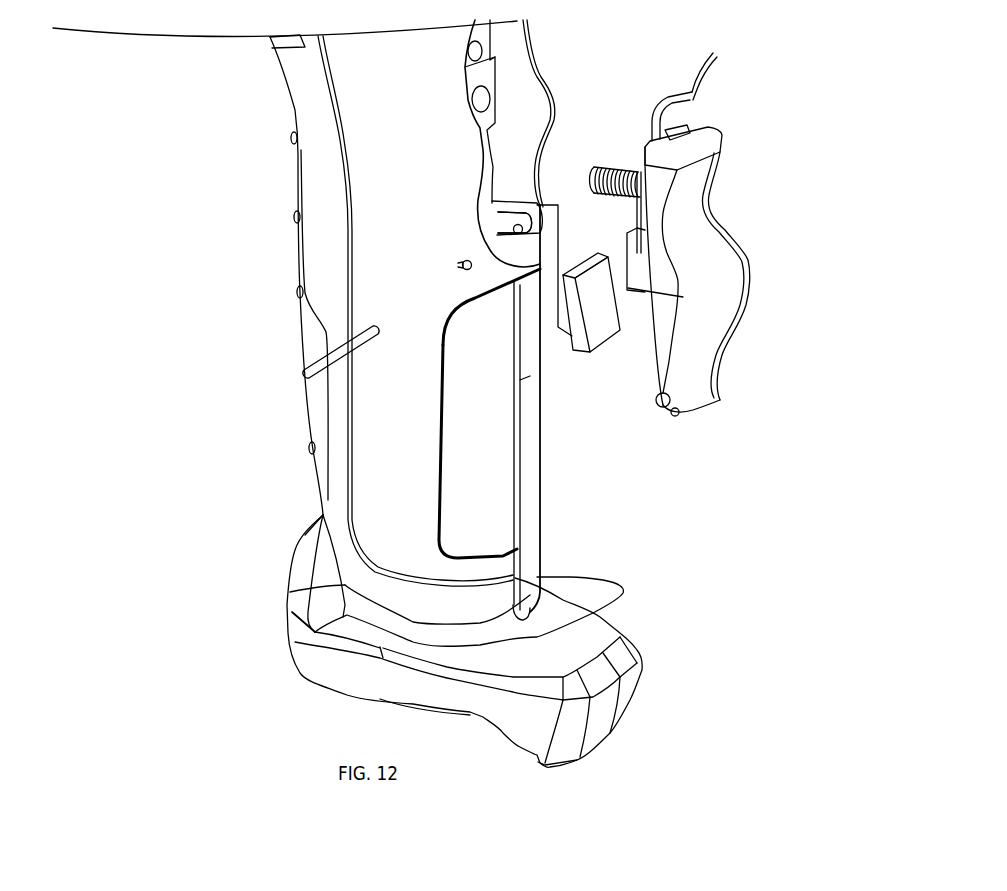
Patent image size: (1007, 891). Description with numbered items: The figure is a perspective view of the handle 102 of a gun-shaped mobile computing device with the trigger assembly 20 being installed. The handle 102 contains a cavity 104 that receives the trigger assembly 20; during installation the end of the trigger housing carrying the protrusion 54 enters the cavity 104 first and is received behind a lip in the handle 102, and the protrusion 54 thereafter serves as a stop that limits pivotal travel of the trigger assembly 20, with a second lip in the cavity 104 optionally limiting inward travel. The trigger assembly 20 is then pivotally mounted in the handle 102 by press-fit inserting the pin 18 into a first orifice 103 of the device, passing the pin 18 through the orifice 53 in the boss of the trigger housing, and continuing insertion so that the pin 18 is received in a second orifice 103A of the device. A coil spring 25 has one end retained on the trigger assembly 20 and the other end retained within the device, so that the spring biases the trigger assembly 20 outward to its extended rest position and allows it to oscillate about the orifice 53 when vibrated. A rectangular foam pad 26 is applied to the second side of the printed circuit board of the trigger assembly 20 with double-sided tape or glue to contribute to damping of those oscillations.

The handle 102 is at (370, 505).
The first orifice 103 is at (458, 265).
The second orifice 103A is at (518, 228).
The cavity 104 is at (530, 110).
The pin 18 is at (303, 373).
The trigger assembly 20 is at (748, 247).
The coil spring 25 is at (602, 158).
The rectangular foam pad 26 is at (583, 355).
The orifice 53 is at (677, 414).
The protrusion 54 is at (692, 110).